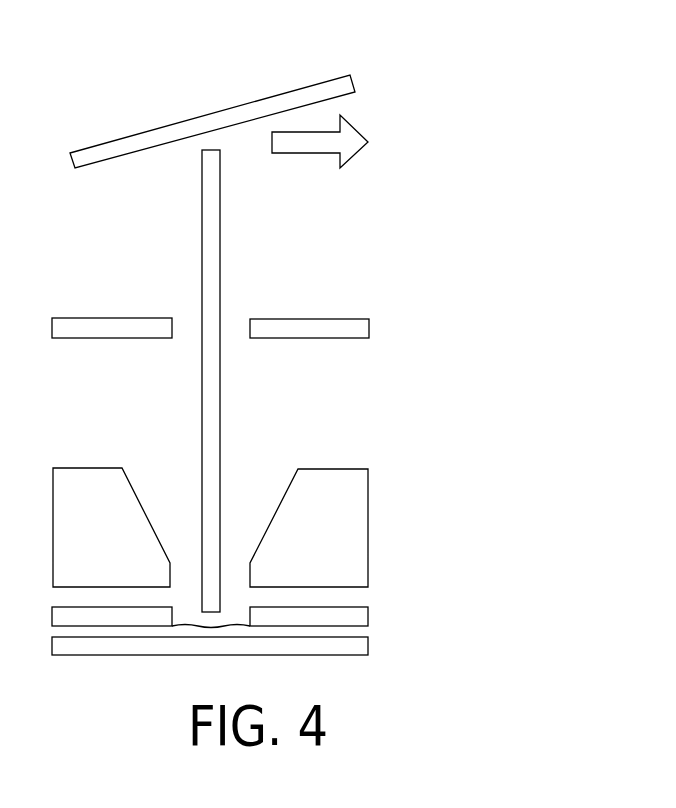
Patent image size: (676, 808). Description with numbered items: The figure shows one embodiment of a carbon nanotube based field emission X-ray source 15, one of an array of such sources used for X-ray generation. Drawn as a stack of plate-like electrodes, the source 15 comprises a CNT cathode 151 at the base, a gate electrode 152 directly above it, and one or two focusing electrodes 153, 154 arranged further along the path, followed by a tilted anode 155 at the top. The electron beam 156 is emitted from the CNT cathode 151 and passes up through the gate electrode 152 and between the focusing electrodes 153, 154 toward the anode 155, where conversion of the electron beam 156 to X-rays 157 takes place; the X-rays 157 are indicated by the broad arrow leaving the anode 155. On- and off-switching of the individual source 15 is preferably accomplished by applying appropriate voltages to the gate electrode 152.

The carbon nanotube based field emission X-ray source 15 is at (480, 76).
The CNT cathode 151 is at (368, 645).
The gate electrode 152 is at (368, 614).
The focusing electrode 153 is at (368, 525).
The focusing electrode 154 is at (369, 328).
The anode 155 is at (351, 83).
The electron beam 156 is at (220, 280).
The X-rays 157 is at (318, 153).